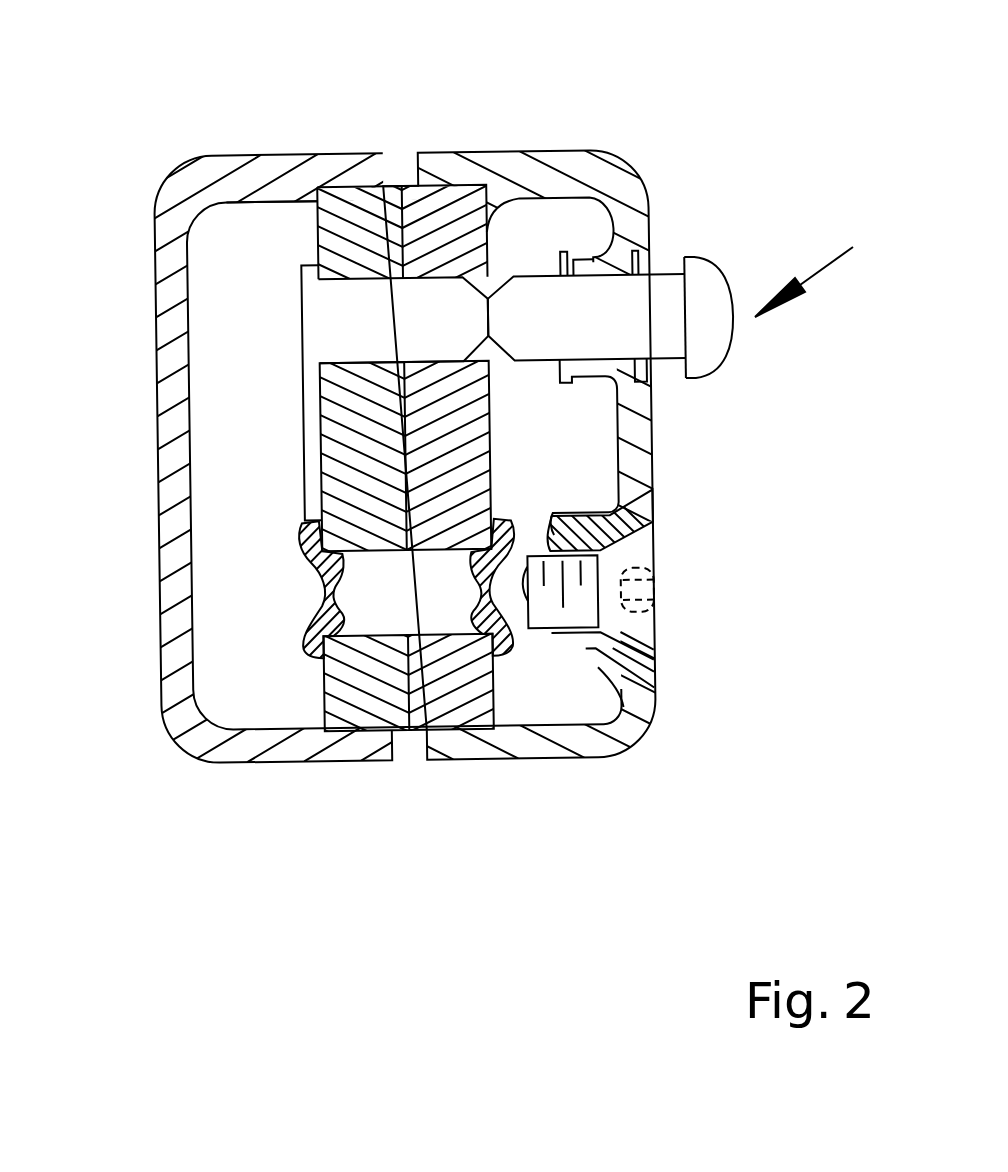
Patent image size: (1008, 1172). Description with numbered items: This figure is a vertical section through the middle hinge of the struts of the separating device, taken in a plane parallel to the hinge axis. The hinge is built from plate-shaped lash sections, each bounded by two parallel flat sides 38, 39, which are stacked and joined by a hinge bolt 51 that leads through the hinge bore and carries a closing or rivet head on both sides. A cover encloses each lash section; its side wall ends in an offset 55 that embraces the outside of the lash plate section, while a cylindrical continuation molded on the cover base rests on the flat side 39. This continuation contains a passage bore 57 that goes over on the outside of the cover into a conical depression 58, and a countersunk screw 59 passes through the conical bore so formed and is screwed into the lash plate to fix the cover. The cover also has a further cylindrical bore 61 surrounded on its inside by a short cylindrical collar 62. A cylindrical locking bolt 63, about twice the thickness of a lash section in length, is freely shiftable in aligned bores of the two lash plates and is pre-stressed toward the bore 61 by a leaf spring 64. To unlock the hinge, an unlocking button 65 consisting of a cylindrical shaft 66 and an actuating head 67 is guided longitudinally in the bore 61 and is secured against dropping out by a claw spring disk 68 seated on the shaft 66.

The flat side 38 is at (402, 196).
The flat side 39 is at (312, 230).
The hinge bolt 51 is at (377, 617).
The offset 55 is at (528, 755).
The passage bore 57 is at (605, 707).
The conical depression 58 is at (653, 543).
The countersunk screw 59 is at (645, 637).
The cylindrical bore 61 is at (603, 297).
The cylindrical collar 62 is at (588, 253).
The locking bolt 63 is at (347, 317).
The leaf spring 64 is at (313, 470).
The unlocking button 65 is at (827, 268).
The cylindrical shaft 66 is at (660, 342).
The actuating head 67 is at (708, 337).
The claw spring disk 68 is at (563, 387).